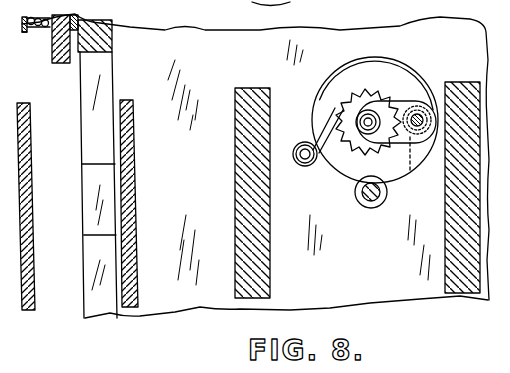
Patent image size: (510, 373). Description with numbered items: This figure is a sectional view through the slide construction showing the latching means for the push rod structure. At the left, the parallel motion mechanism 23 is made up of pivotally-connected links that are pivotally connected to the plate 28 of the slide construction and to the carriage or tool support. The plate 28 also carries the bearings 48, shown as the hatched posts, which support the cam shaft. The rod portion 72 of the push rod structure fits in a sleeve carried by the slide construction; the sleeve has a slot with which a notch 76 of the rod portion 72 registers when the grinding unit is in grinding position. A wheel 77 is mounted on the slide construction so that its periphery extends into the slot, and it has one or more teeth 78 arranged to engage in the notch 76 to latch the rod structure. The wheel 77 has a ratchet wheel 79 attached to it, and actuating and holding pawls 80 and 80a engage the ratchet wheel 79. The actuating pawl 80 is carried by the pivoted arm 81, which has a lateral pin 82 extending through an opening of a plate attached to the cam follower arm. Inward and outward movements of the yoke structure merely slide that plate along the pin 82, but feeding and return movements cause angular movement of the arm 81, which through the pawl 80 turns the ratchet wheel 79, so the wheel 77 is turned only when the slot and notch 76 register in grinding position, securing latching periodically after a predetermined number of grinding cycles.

The parallel motion mechanism 23 is at (41, 63).
The plate 28 is at (193, 300).
The bearings 48 is at (248, 202).
The rod portion 72 is at (377, 202).
The notch 76 is at (356, 196).
The wheel 77 is at (306, 167).
The teeth 78 is at (342, 72).
The ratchet wheel 79 is at (371, 92).
The actuating pawl 80 is at (413, 166).
The holding pawl 80a is at (306, 142).
The pivoted arm 81 is at (407, 102).
The lateral pin 82 is at (418, 113).